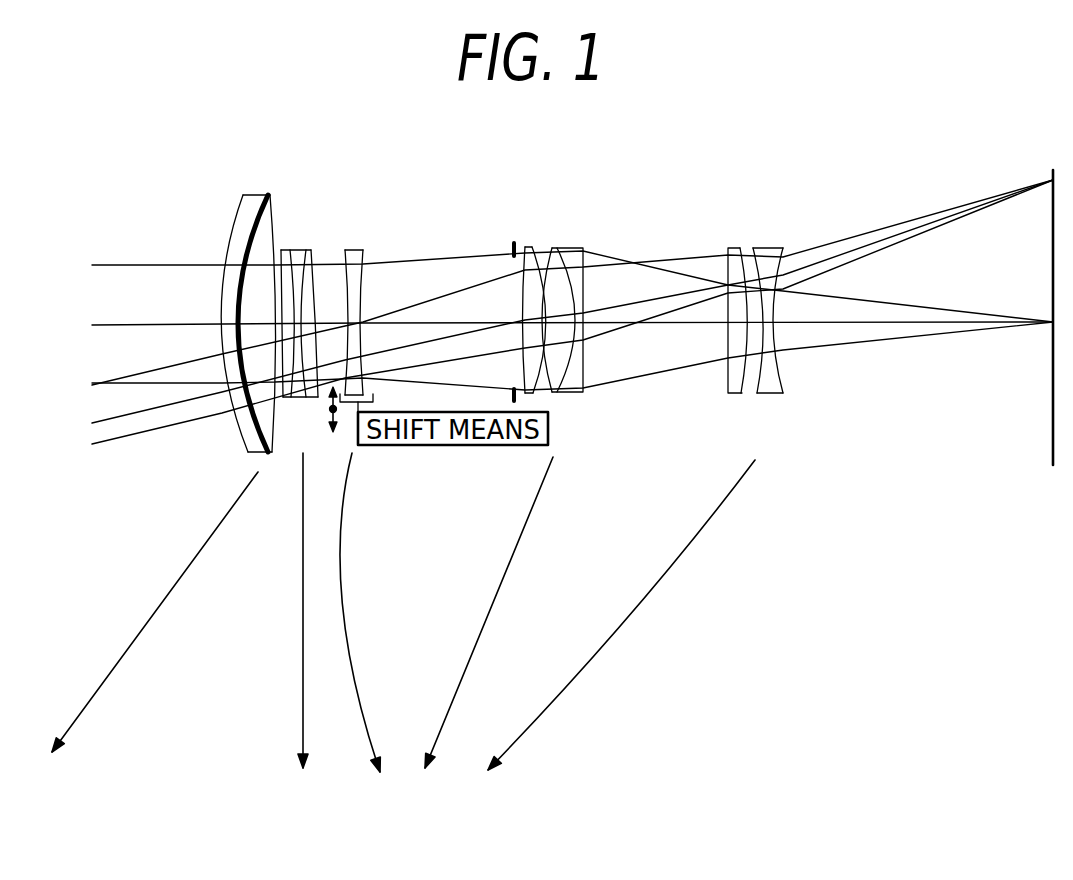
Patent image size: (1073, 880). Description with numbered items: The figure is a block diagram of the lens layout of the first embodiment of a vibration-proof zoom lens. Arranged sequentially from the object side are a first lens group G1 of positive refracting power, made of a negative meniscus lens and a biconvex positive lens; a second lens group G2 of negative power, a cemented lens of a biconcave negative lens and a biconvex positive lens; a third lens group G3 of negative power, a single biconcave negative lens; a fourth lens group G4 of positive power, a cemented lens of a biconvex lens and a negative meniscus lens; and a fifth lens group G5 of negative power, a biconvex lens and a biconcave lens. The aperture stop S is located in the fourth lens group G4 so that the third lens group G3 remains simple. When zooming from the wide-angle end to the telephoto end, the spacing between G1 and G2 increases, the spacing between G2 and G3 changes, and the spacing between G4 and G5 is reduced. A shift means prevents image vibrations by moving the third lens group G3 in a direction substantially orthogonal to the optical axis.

The first lens group G1 is at (278, 187).
The second lens group G2 is at (318, 242).
The third lens group G3 is at (373, 242).
The fourth lens group G4 is at (585, 231).
The fifth lens group G5 is at (792, 231).
The aperture stop S is at (513, 244).